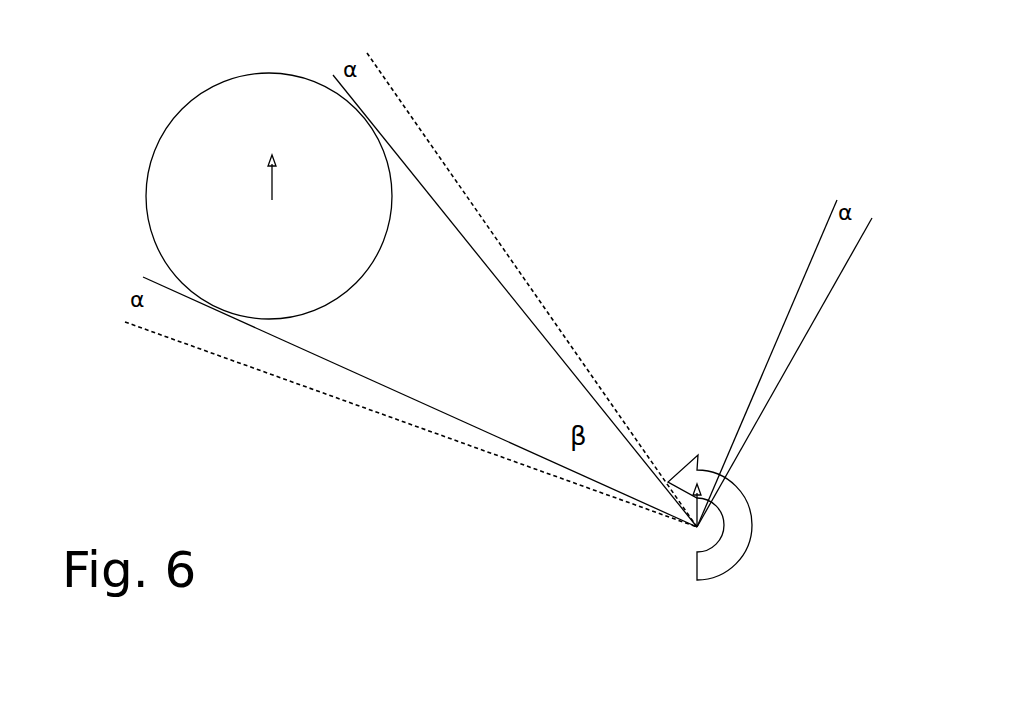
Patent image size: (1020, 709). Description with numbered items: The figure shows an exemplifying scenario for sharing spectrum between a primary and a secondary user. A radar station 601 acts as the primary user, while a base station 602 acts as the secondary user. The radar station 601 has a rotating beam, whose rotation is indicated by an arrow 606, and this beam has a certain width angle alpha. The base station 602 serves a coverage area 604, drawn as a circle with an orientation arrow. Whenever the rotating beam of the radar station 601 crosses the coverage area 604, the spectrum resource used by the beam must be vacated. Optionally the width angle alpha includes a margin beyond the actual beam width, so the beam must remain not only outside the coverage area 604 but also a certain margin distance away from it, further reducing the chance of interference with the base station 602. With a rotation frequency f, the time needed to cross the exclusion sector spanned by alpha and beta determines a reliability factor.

The radar station 601 is at (597, 508).
The base station 602 is at (350, 244).
The coverage area 604 is at (257, 181).
The arrow 606 is at (761, 499).